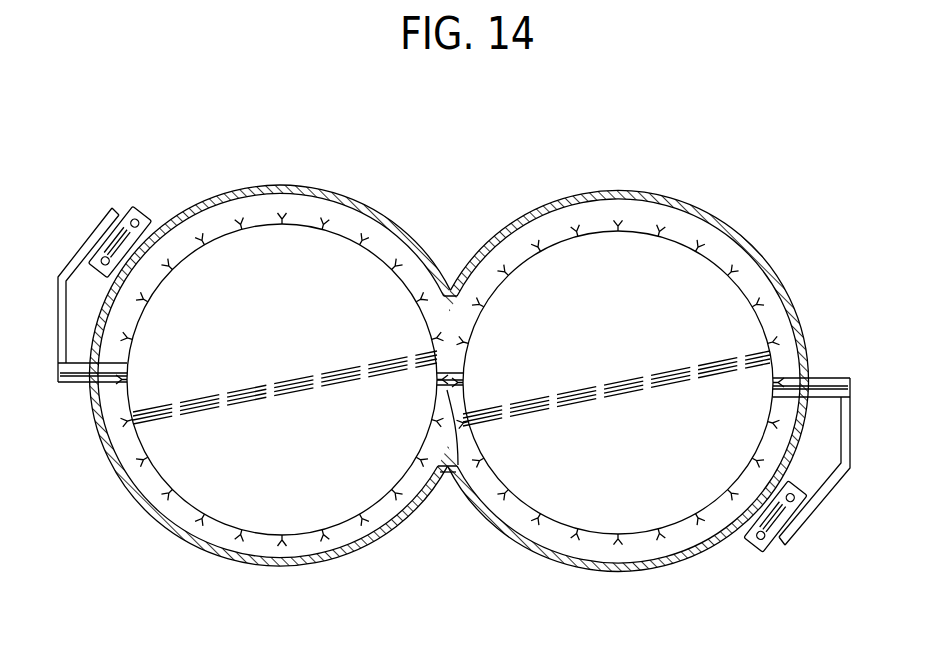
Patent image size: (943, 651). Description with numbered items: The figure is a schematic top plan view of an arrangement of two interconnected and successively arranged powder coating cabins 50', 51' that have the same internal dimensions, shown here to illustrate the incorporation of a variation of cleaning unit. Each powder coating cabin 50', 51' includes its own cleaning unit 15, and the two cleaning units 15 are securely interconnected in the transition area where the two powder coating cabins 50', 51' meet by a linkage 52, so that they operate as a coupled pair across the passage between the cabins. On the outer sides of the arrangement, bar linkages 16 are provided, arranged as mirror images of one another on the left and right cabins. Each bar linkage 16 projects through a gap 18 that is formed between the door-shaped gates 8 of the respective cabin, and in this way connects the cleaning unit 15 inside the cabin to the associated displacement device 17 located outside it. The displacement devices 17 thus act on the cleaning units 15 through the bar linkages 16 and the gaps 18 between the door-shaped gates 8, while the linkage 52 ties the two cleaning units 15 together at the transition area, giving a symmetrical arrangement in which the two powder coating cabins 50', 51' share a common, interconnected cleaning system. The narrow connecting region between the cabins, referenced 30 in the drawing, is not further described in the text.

The door-shaped gate 8 is at (100, 326).
The cleaning unit 15 is at (555, 235).
The bar linkage 16 is at (71, 268).
The displacement device 17 is at (122, 233).
The gap 18 is at (846, 378).
The connecting passage between chambers 30 is at (438, 320).
The powder coating cabin 50' is at (269, 328).
The powder coating cabin 51' is at (628, 334).
The linkage 52 is at (470, 503).